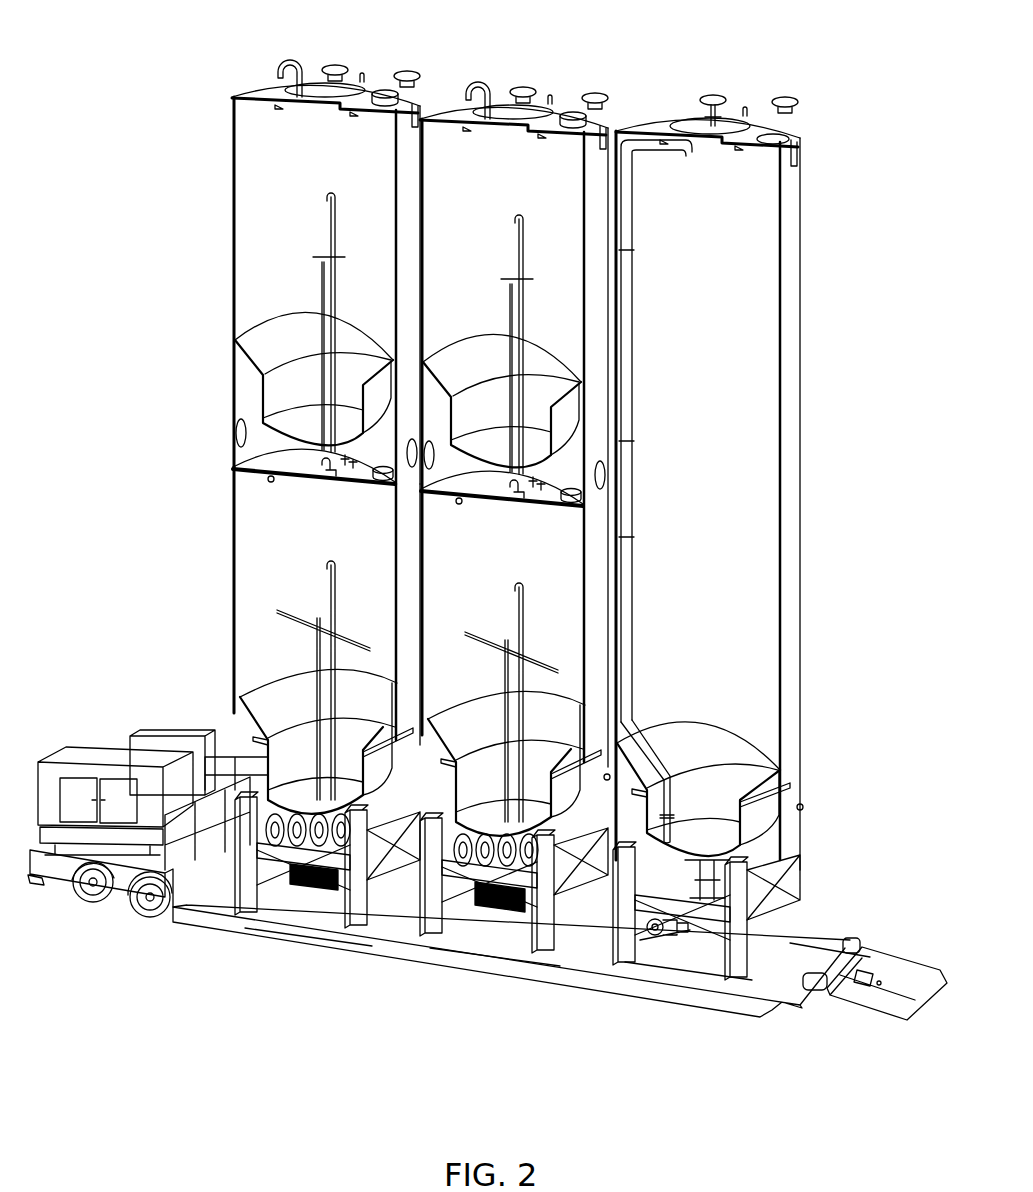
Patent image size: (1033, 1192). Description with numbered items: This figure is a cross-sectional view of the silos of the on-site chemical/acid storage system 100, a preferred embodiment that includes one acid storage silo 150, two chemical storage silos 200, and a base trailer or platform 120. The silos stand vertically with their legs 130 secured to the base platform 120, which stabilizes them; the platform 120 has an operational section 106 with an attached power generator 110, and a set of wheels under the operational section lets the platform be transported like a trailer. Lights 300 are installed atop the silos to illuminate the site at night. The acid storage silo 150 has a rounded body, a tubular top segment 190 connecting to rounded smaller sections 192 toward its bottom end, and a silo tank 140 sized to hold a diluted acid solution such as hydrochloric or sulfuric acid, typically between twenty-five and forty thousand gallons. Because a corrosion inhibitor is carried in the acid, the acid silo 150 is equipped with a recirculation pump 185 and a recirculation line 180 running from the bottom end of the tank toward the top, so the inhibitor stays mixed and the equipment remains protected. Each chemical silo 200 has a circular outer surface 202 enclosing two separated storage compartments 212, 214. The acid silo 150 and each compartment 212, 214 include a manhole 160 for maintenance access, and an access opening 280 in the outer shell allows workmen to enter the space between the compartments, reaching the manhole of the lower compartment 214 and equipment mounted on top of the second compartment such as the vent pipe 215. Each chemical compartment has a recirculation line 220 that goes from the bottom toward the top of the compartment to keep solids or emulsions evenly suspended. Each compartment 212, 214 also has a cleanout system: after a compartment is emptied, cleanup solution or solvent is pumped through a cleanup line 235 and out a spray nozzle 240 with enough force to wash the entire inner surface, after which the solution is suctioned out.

The on-site chemical/acid storage system 100 is at (122, 334).
The operational section 106 is at (45, 878).
The power generator 110 is at (82, 752).
The base platform 120 is at (840, 943).
The legs 130 is at (790, 852).
The silo tank 140 is at (718, 556).
The acid storage silo 150 is at (798, 342).
The manhole 160 is at (385, 480).
The recirculation line 180 is at (640, 406).
The recirculation pump 185 is at (653, 936).
The tubular top segment 190 is at (795, 500).
The rounded smaller sections 192 is at (762, 815).
The chemical storage silo 200 is at (230, 272).
The circular outer surface 202 is at (235, 650).
The storage compartment 212 is at (260, 138).
The storage compartment 214 is at (255, 556).
The vent pipe 215 is at (482, 104).
The recirculation line 220 is at (325, 222).
The cleanup line 235 is at (471, 378).
The spray nozzle 240 is at (479, 344).
The access opening 280 is at (236, 433).
The lights 300 is at (331, 64).